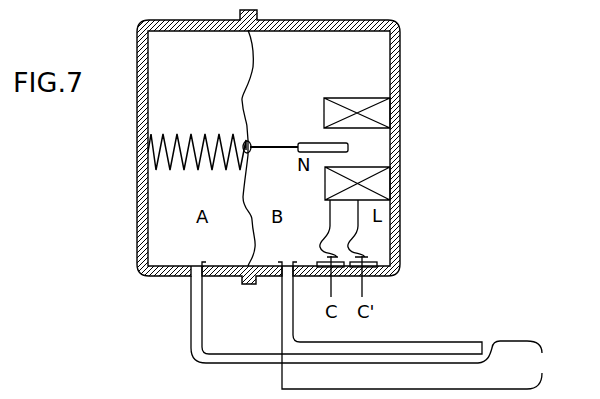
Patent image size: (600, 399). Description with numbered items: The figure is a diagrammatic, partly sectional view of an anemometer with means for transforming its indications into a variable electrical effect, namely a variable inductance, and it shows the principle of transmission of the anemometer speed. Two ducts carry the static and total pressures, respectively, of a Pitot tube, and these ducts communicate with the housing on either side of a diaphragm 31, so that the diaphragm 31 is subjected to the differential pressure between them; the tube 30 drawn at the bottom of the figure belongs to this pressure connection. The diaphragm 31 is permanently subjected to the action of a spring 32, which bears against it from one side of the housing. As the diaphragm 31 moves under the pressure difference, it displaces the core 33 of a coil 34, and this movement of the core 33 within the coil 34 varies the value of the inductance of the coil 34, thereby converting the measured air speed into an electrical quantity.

The tube 30 is at (437, 343).
The diaphragm 31 is at (245, 198).
The spring 32 is at (206, 132).
The core 33 is at (312, 143).
The coil 34 is at (352, 172).